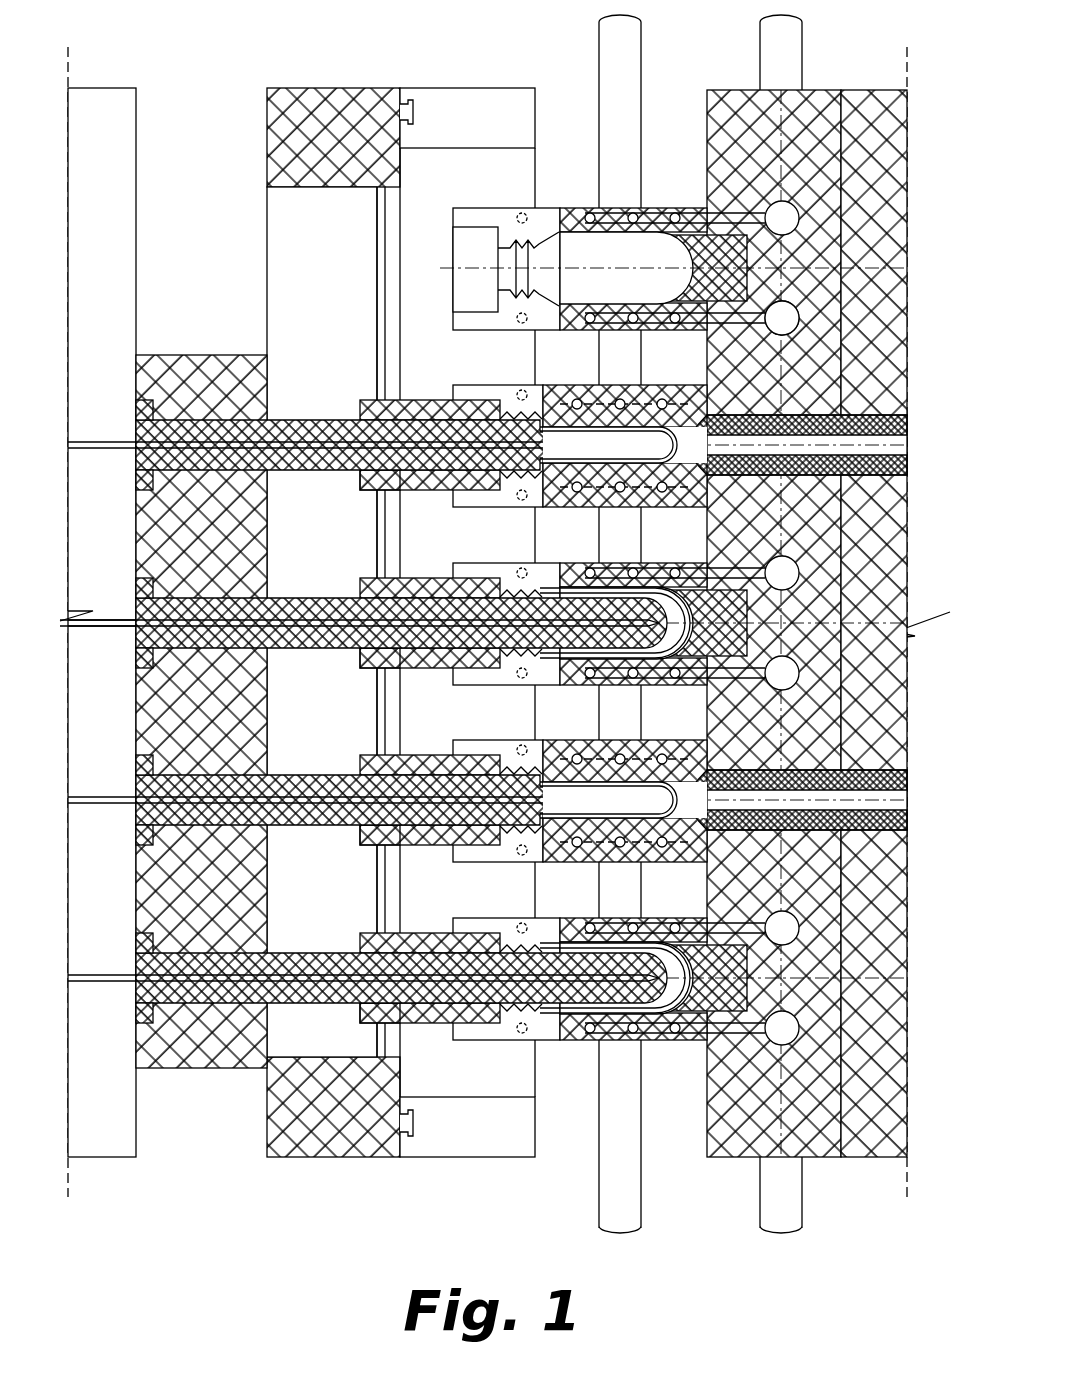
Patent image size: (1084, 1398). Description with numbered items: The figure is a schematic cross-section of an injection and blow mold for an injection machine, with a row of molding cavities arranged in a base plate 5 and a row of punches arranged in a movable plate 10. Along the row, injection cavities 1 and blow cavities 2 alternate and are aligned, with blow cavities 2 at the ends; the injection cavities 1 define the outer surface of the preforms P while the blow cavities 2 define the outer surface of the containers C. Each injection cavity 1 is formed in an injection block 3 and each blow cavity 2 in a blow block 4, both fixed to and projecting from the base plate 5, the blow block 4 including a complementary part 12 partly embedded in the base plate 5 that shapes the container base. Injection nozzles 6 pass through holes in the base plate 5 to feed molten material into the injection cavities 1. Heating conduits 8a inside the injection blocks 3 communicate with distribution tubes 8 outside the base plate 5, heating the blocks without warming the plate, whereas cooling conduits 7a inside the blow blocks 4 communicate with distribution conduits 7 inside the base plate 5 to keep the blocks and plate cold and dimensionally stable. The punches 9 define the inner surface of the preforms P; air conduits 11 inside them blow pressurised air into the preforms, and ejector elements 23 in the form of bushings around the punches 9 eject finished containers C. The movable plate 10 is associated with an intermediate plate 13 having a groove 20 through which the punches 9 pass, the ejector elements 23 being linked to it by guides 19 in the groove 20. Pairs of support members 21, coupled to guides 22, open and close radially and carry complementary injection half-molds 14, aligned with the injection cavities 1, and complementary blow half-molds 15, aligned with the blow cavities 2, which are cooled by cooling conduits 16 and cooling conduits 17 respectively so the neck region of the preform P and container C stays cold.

The injection cavity 1 is at (745, 400).
The blow cavity 2 is at (680, 253).
The injection block 3 is at (582, 385).
The blow block 4 is at (582, 206).
The base plate 5 is at (820, 95).
The injection nozzle 6 is at (905, 431).
The distribution conduit 7 is at (760, 48).
The cooling conduit 7a is at (676, 206).
The distribution tube 8 is at (641, 68).
The heating conduit 8a is at (676, 385).
The punch 9 is at (334, 418).
The movable plate 10 is at (205, 360).
The air conduit 11 is at (304, 418).
The complementary part 12 is at (760, 278).
The intermediate plate 13 is at (318, 105).
The complementary injection half-mold 14 is at (466, 387).
The complementary blow half-mold 15 is at (466, 210).
The cooling conduit 16 is at (522, 387).
The cooling conduit 17 is at (522, 210).
The guide 19 is at (385, 278).
The groove 20 is at (275, 252).
The support member 21 is at (472, 100).
The guide 22 is at (412, 110).
The ejector element 23 is at (360, 489).
The preform P is at (715, 455).
The container C is at (745, 628).